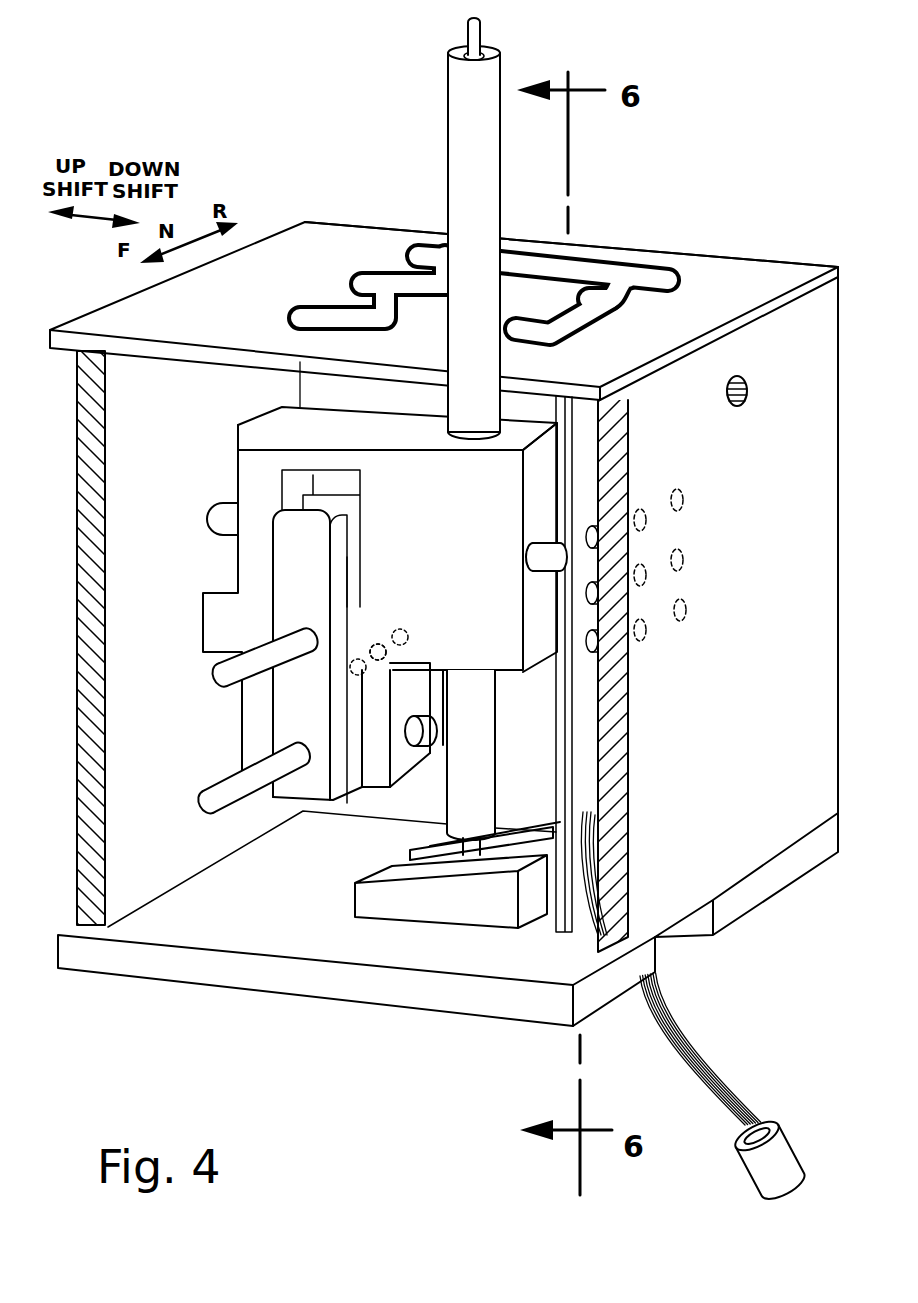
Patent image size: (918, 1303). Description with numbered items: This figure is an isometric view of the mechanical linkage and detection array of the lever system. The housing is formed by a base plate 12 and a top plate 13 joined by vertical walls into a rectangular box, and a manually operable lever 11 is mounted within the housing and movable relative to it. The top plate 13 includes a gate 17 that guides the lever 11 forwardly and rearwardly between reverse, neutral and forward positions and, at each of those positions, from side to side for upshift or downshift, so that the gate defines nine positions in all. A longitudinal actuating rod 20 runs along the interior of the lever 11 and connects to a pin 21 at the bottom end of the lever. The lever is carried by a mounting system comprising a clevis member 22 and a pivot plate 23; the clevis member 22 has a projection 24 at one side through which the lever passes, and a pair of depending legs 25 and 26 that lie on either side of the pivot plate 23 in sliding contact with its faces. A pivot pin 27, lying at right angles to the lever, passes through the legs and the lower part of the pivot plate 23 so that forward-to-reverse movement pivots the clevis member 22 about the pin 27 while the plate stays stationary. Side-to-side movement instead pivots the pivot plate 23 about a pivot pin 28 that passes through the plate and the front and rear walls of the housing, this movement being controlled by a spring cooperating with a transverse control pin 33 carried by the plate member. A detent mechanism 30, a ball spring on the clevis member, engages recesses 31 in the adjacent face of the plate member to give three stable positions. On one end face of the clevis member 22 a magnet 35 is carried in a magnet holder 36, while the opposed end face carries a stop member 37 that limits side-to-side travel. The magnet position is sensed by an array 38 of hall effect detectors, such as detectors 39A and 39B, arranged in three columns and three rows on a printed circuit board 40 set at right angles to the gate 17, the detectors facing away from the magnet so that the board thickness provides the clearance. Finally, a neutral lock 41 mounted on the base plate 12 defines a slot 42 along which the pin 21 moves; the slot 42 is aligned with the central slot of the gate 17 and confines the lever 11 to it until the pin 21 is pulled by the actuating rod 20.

The manually operable lever 11 is at (463, 135).
The base plate 12 is at (155, 970).
The top plate 13 is at (340, 252).
The gate 17 is at (590, 265).
The longitudinal actuating rod 20 is at (477, 33).
The pin 21 is at (463, 840).
The clevis member 22 is at (238, 462).
The pivot plate 23 is at (300, 567).
The projection 24 is at (545, 473).
The depending leg 25 is at (242, 730).
The depending leg 26 is at (377, 745).
The pivot pin 27 is at (410, 715).
The pivot pin 28 is at (218, 672).
The detent mechanism 30 is at (372, 640).
The recesses 31 is at (405, 630).
The transverse control pin 33 is at (233, 795).
The magnet 35 is at (528, 540).
The magnet holder 36 is at (535, 557).
The stop member 37 is at (210, 520).
The array of hall effect detectors 38 is at (638, 508).
The hall effect detector 39A is at (643, 563).
The hall effect detector 39B is at (688, 500).
The printed circuit board 40 is at (583, 745).
The neutral lock 41 is at (380, 890).
The slot 42 is at (515, 847).